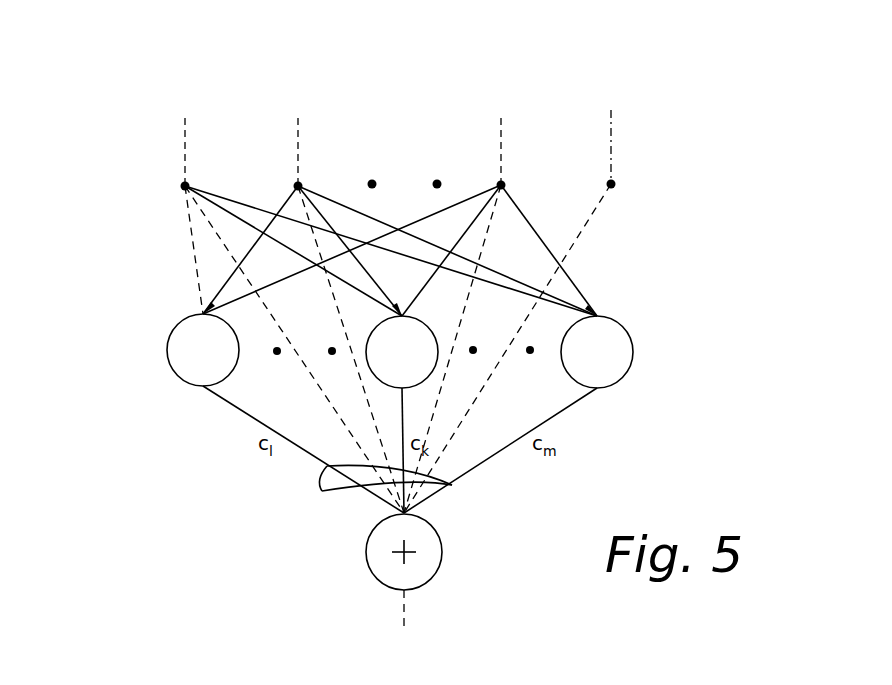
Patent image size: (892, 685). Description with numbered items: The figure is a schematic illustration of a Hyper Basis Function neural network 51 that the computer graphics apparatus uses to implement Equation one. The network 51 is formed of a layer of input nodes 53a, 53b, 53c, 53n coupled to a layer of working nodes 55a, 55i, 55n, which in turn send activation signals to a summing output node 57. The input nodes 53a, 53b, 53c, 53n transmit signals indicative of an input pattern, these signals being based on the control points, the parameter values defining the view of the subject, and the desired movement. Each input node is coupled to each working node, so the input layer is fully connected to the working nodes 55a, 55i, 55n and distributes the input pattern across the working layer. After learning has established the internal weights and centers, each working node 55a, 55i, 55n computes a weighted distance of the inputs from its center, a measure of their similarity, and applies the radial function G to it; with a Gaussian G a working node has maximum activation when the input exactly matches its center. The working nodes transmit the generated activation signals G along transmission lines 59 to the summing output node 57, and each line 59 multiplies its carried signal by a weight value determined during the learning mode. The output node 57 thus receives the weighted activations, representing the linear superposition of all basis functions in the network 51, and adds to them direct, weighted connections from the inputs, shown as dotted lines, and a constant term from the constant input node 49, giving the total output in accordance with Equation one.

The network 51 is at (122, 145).
The input node 53a is at (188, 184).
The input node 53b is at (302, 184).
The input node 53c is at (375, 183).
The input node 53n is at (504, 183).
The constant input node 49 is at (614, 182).
The working node 55a is at (172, 334).
The working node 55i is at (429, 330).
The working node 55n is at (630, 337).
The summing output node 57 is at (441, 539).
The transmission lines 59 is at (373, 494).